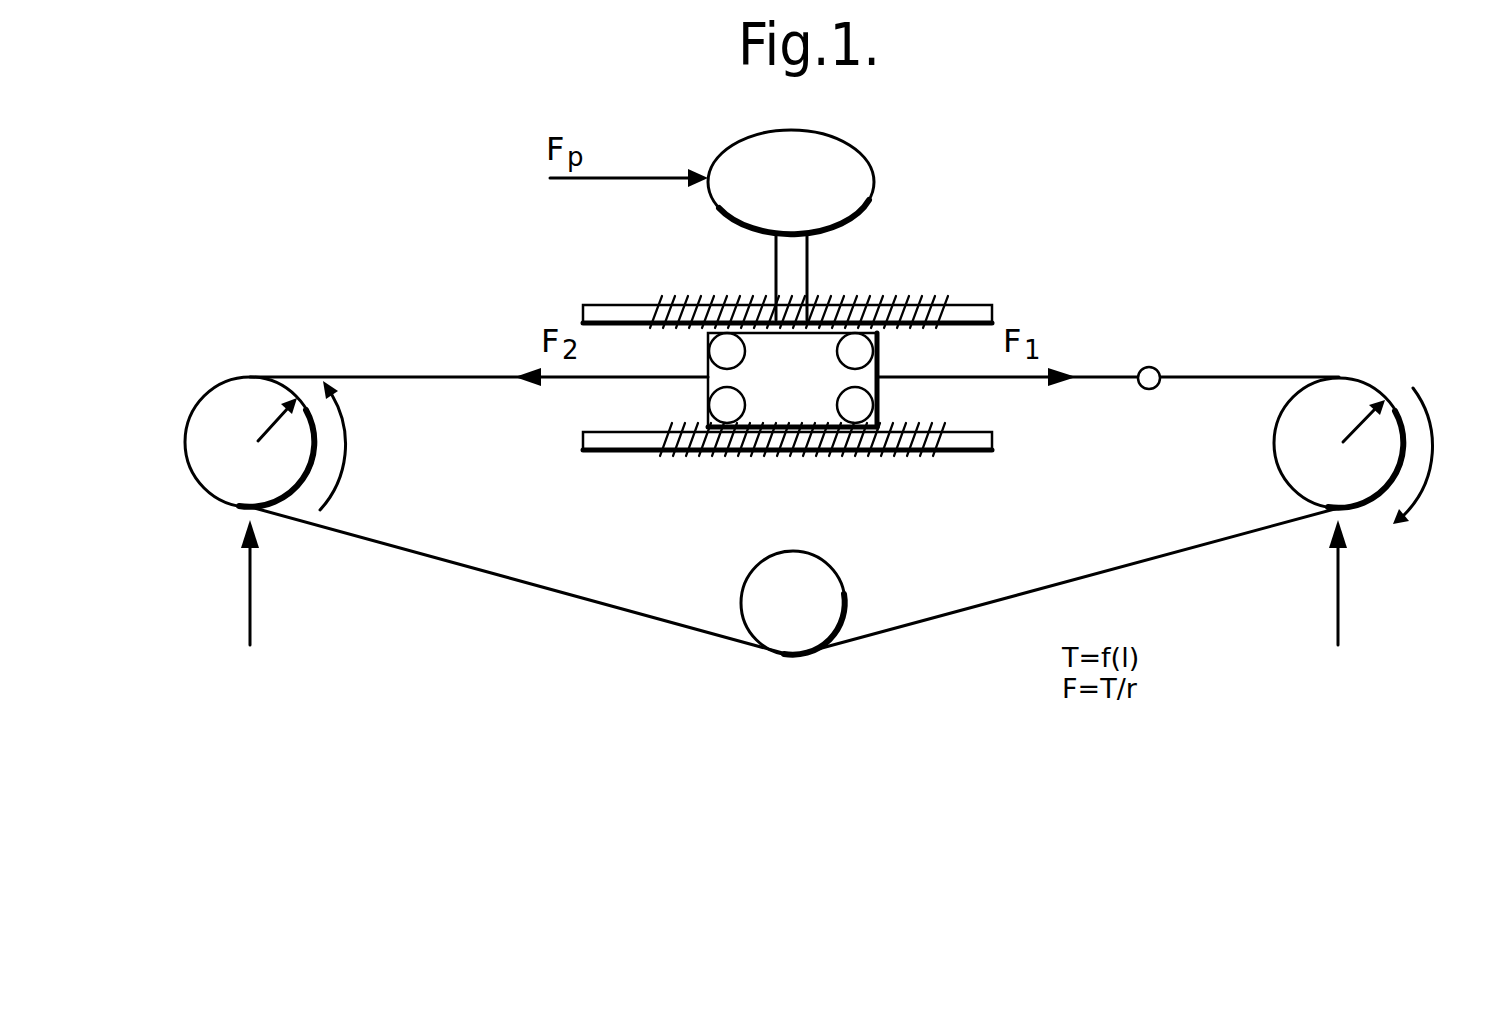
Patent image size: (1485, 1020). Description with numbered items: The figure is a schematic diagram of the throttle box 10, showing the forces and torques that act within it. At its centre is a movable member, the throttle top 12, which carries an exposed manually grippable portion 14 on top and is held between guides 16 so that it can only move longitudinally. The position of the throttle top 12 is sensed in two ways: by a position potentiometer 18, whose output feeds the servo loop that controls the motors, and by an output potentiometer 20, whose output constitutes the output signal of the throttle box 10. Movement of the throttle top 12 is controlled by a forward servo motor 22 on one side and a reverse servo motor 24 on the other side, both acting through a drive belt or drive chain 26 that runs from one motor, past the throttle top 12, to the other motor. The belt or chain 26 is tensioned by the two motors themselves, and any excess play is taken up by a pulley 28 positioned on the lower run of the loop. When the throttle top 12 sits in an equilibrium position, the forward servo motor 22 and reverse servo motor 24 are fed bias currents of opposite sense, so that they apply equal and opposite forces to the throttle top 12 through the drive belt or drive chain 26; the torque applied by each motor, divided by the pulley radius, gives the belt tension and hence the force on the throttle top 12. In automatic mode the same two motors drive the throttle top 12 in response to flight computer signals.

The throttle box 10 is at (936, 152).
The throttle top 12 is at (785, 402).
The manually grippable portion 14 is at (820, 129).
The guides 16 is at (648, 327).
The position potentiometer 18 is at (976, 314).
The output potentiometer 20 is at (975, 452).
The forward servo motor 22 is at (232, 377).
The reverse servo motor 24 is at (1352, 378).
The drive belt or drive chain 26 is at (1152, 367).
The pulley 28 is at (741, 597).